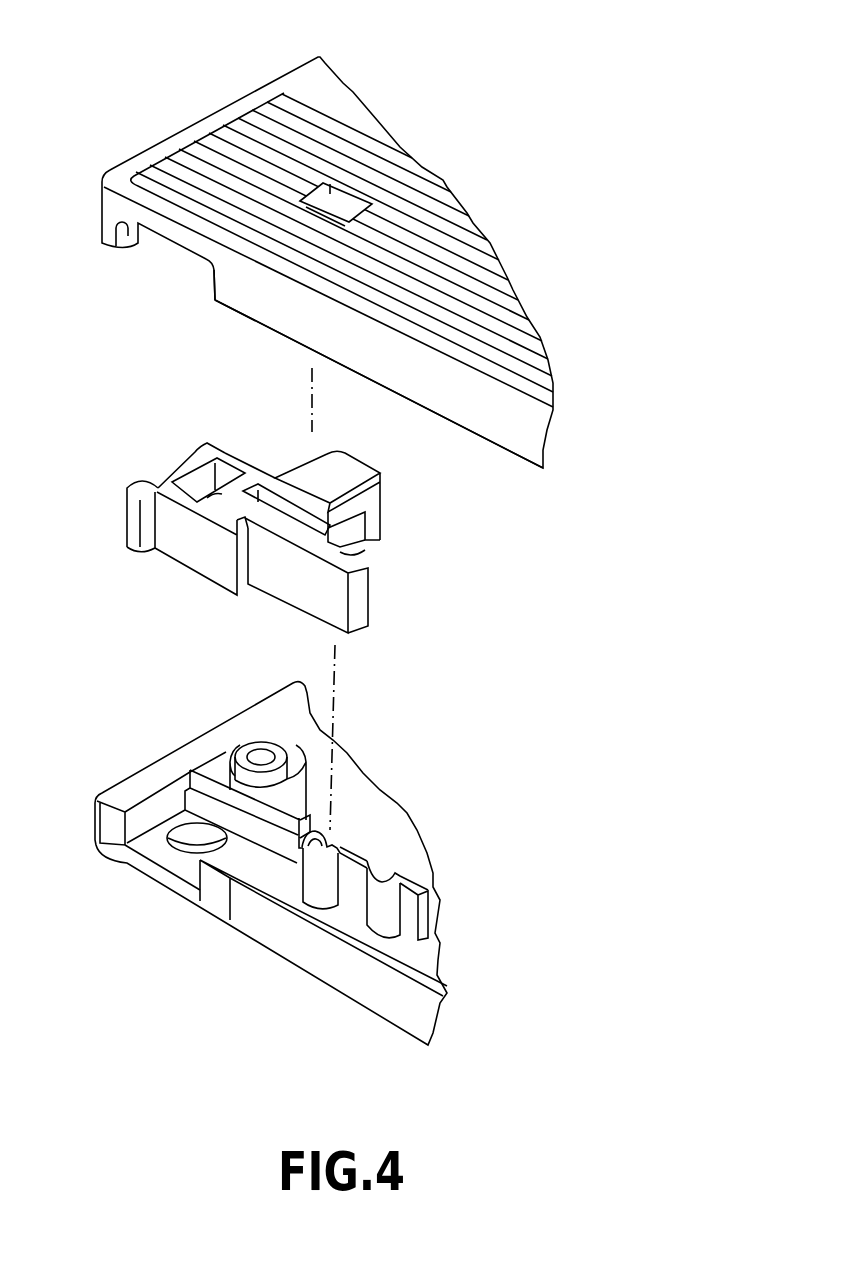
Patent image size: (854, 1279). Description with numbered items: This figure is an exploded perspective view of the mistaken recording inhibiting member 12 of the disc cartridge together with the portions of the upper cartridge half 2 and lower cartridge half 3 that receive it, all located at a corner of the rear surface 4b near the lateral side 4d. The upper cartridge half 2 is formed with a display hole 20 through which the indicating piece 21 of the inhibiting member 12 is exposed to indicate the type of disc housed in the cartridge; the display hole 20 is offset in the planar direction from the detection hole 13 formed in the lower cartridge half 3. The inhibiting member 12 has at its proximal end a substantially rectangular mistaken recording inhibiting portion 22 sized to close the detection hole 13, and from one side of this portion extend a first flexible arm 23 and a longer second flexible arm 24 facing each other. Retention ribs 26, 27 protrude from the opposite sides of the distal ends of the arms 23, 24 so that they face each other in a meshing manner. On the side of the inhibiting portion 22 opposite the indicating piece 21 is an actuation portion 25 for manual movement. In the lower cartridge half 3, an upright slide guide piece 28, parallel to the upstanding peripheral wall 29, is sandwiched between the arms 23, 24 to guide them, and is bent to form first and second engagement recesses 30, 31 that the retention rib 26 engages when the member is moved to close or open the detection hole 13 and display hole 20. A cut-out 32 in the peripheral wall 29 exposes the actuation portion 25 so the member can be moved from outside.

The upper cartridge half 2 is at (135, 160).
The rear surface 4b is at (266, 82).
The display hole 20 is at (318, 192).
The lateral side 4d is at (278, 310).
The mistaken recording inhibiting member 12 is at (140, 487).
The indicating piece 21 is at (353, 472).
The mistaken recording inhibiting portion 22 is at (237, 453).
The first flexible arm 23 is at (337, 512).
The second flexible arm 24 is at (308, 548).
The actuation portion 25 is at (135, 545).
The retention rib 26 is at (348, 534).
The retention rib 27 is at (362, 562).
The lower cartridge half 3 is at (187, 747).
The detection hole 13 is at (190, 843).
The slide guide piece 28 is at (430, 915).
The upstanding peripheral wall 29 is at (335, 937).
The first engagement recess 30 is at (327, 862).
The second engagement recess 31 is at (393, 893).
The cut-out 32 is at (127, 860).